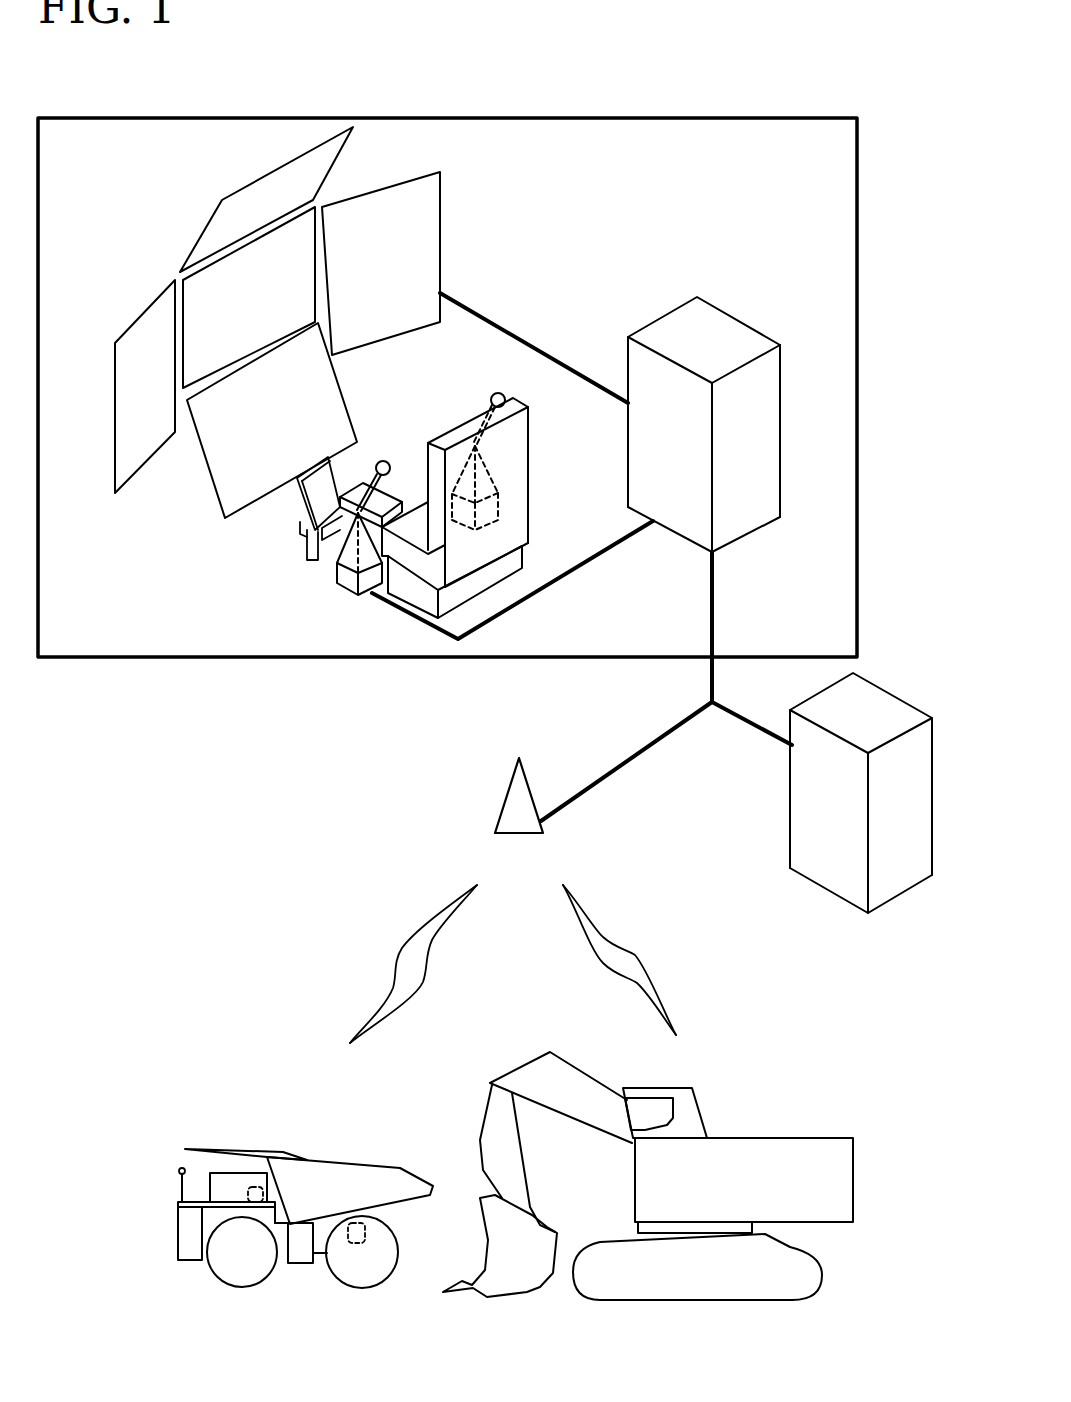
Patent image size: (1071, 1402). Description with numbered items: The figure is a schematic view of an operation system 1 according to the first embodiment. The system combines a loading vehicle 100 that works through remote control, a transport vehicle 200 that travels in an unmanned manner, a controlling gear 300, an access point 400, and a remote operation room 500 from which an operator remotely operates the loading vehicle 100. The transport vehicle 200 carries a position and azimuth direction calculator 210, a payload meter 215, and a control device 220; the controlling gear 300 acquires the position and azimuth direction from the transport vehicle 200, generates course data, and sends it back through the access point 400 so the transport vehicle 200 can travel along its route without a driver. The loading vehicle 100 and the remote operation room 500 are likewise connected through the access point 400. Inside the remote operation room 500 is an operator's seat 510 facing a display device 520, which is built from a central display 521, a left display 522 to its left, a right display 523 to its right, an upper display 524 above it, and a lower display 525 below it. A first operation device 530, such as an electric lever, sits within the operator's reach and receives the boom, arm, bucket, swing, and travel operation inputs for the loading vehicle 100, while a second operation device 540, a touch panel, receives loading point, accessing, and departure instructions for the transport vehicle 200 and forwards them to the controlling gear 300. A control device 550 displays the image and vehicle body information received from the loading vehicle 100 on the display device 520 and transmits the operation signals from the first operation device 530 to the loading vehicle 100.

The operation system 1 is at (878, 118).
The loading vehicle 100 is at (807, 1137).
The transport vehicle 200 is at (383, 1165).
The position and azimuth direction calculator 210 is at (183, 1170).
The payload meter 215 is at (358, 1243).
The control device 220 is at (257, 1187).
The controlling gear 300 is at (877, 695).
The access point 400 is at (528, 783).
The remote operation room 500 is at (685, 117).
The operator's seat 510 is at (530, 478).
The display device 520 is at (128, 205).
The central display 521 is at (190, 302).
The left display 522 is at (128, 400).
The right display 523 is at (432, 233).
The upper display 524 is at (243, 202).
The lower display 525 is at (222, 478).
The first operation device 530 is at (335, 560).
The second operation device 540 is at (300, 508).
The control device 550 is at (760, 450).